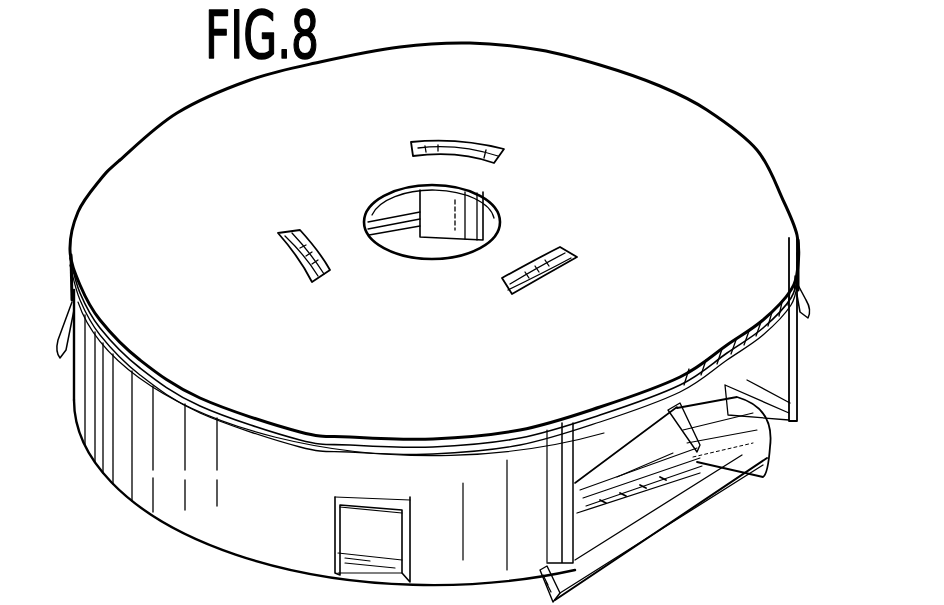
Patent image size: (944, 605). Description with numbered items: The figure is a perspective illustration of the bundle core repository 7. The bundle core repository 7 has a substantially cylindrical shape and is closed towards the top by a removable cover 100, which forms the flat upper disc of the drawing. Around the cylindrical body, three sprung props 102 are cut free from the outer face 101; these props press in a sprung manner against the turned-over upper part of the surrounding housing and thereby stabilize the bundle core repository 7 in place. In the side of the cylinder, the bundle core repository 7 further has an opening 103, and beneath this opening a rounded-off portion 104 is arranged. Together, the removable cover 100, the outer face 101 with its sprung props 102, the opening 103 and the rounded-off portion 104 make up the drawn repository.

The bundle core repository 7 is at (627, 54).
The removable cover 100 is at (190, 133).
The outer face 101 is at (157, 470).
The sprung props 102 is at (58, 355).
The opening 103 is at (598, 437).
The rounded-off portion 104 is at (725, 470).